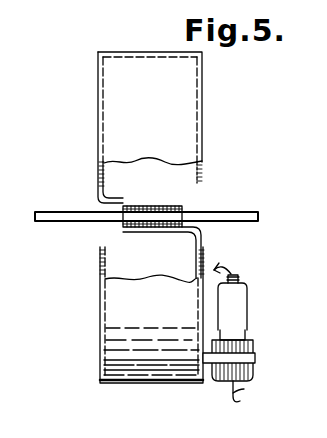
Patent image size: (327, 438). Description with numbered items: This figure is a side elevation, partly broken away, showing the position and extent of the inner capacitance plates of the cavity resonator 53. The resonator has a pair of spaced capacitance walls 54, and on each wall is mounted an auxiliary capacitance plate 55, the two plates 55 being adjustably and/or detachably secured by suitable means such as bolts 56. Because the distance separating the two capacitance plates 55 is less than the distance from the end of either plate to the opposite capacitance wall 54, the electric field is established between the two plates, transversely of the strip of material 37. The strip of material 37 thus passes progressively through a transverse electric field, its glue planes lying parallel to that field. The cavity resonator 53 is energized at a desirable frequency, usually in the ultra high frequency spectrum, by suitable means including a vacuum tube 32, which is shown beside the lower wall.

The vacuum tube 32 is at (247, 307).
The strip of material 37 is at (227, 212).
The cavity resonator 53 is at (204, 100).
The capacitance wall 54 is at (203, 161).
The auxiliary capacitance plate 55 is at (146, 206).
The bolt 56 is at (84, 170).